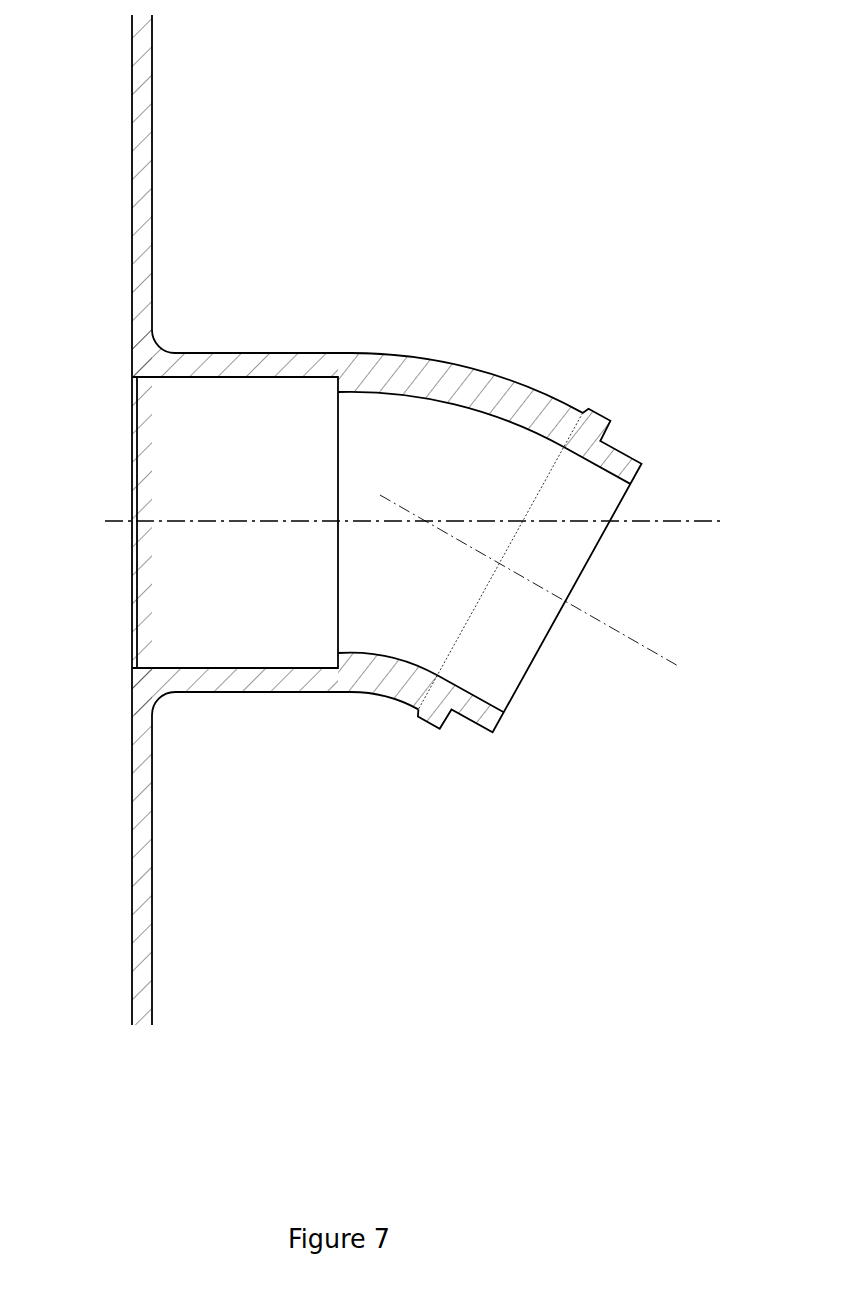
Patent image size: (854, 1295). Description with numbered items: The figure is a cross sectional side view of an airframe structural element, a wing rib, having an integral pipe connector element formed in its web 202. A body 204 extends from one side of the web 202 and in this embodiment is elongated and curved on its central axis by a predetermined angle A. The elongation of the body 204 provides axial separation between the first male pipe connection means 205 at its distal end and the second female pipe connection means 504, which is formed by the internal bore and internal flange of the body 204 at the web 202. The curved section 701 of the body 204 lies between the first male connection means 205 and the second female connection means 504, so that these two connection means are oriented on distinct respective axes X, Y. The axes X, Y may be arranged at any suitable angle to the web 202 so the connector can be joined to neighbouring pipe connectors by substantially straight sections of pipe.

The web 202 is at (152, 104).
The body 204 is at (311, 365).
The second female pipe connection means 504 is at (162, 672).
The curved section 701 is at (458, 375).
The first male pipe connection means 205 is at (452, 702).
The axis X is at (540, 589).
The axis Y is at (405, 522).
The predetermined angle A is at (487, 537).